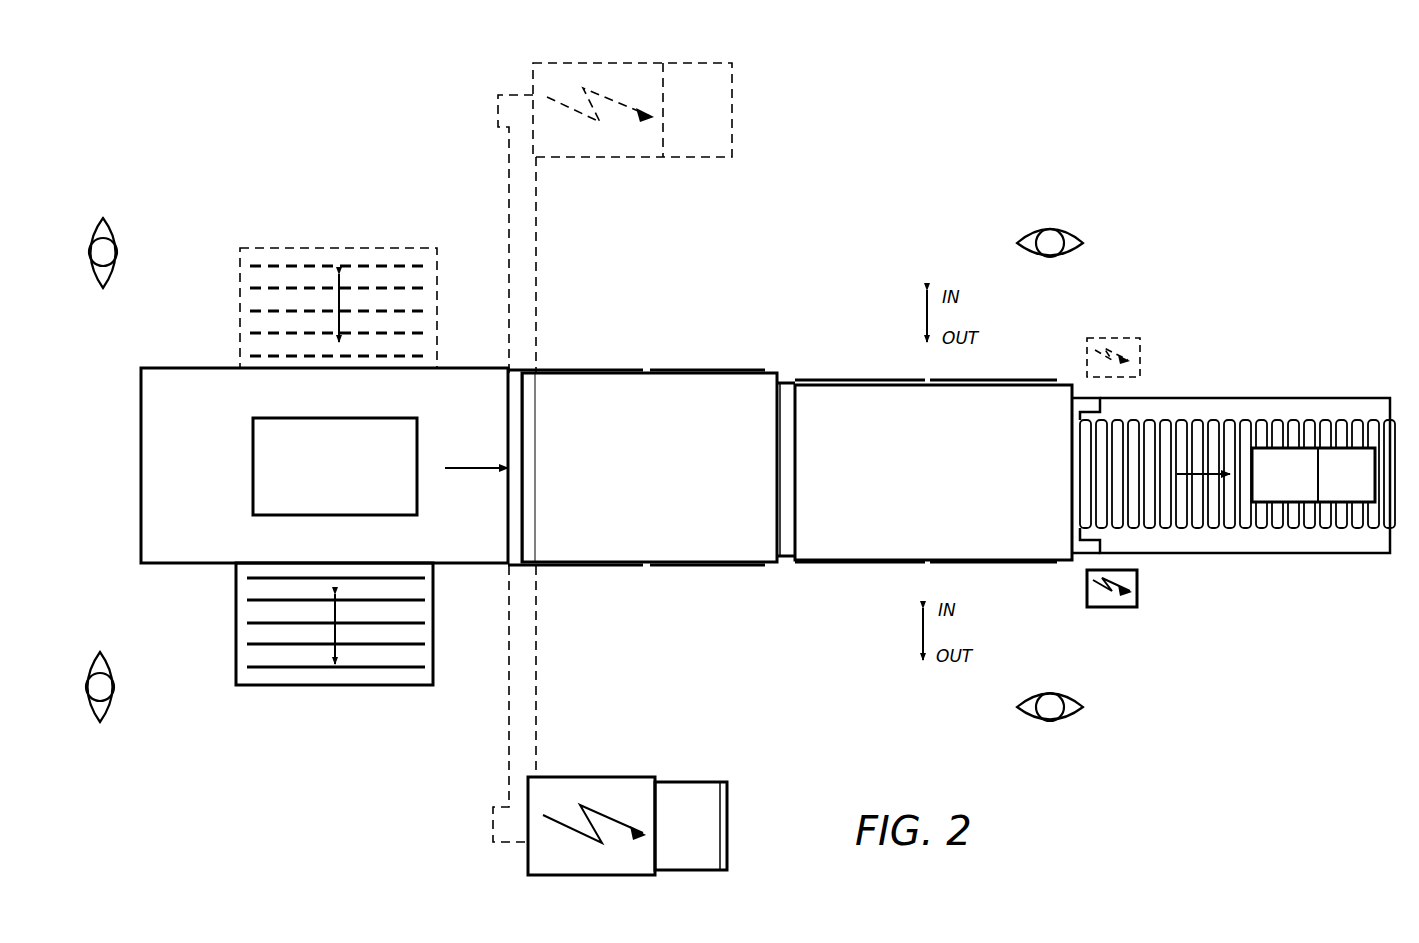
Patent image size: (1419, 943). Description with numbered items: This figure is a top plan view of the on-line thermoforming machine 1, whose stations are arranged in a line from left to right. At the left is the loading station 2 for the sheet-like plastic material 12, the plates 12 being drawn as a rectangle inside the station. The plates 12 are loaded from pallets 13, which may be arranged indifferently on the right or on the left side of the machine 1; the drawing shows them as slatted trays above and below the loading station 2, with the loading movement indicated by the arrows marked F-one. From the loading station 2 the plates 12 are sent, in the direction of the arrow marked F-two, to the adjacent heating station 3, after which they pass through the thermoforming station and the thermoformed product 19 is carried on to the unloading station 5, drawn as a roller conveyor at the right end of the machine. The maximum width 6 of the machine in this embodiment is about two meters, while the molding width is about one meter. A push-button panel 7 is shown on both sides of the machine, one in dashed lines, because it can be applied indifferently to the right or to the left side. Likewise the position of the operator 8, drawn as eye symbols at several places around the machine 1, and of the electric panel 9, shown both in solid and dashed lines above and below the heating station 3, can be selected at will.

The on-line thermoforming machine 1 is at (938, 187).
The loading station 2 is at (216, 368).
The heating station 3 is at (622, 373).
The unloading station 5 is at (1270, 398).
The maximum width 6 is at (1360, 455).
The push-button panel 7 is at (1140, 350).
The operator 8 is at (1085, 243).
The electric panel 9 is at (612, 63).
The sheet-like plastic material 12 is at (253, 487).
The pallets 13 is at (272, 672).
The thermoformed product 19 is at (1320, 508).